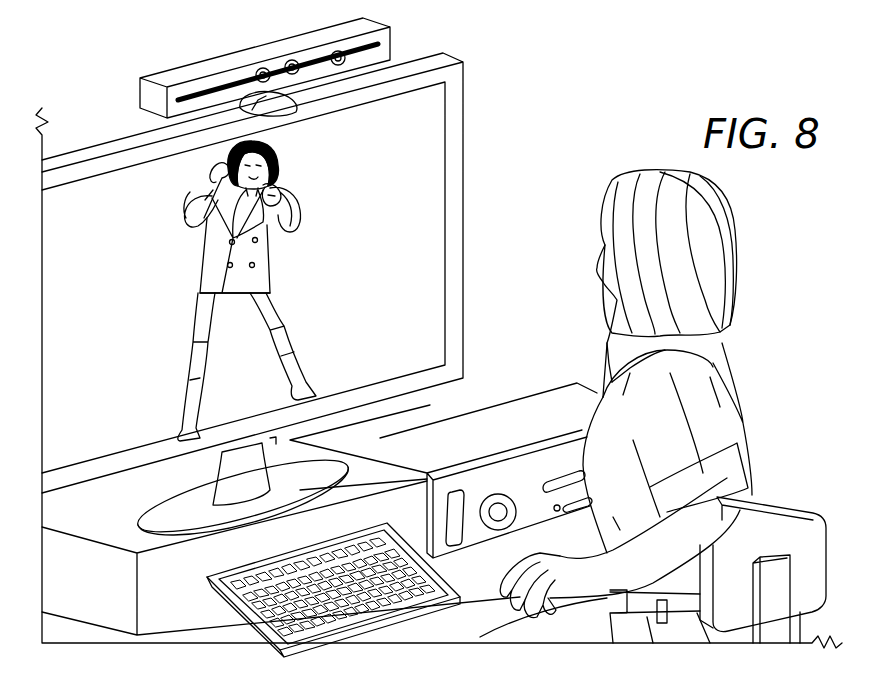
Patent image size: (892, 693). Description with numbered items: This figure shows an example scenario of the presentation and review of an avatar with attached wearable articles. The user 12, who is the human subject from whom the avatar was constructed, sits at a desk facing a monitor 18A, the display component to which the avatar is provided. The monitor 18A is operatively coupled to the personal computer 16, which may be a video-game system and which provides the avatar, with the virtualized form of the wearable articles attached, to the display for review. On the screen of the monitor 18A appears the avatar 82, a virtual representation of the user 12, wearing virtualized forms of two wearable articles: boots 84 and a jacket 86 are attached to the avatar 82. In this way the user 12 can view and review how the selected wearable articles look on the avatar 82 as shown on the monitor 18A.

The human subject 12 is at (772, 361).
The personal computer 16 is at (512, 440).
The monitor 18A is at (517, 108).
The avatar 82 is at (246, 288).
The boots 84 is at (292, 348).
The jacket 86 is at (197, 292).